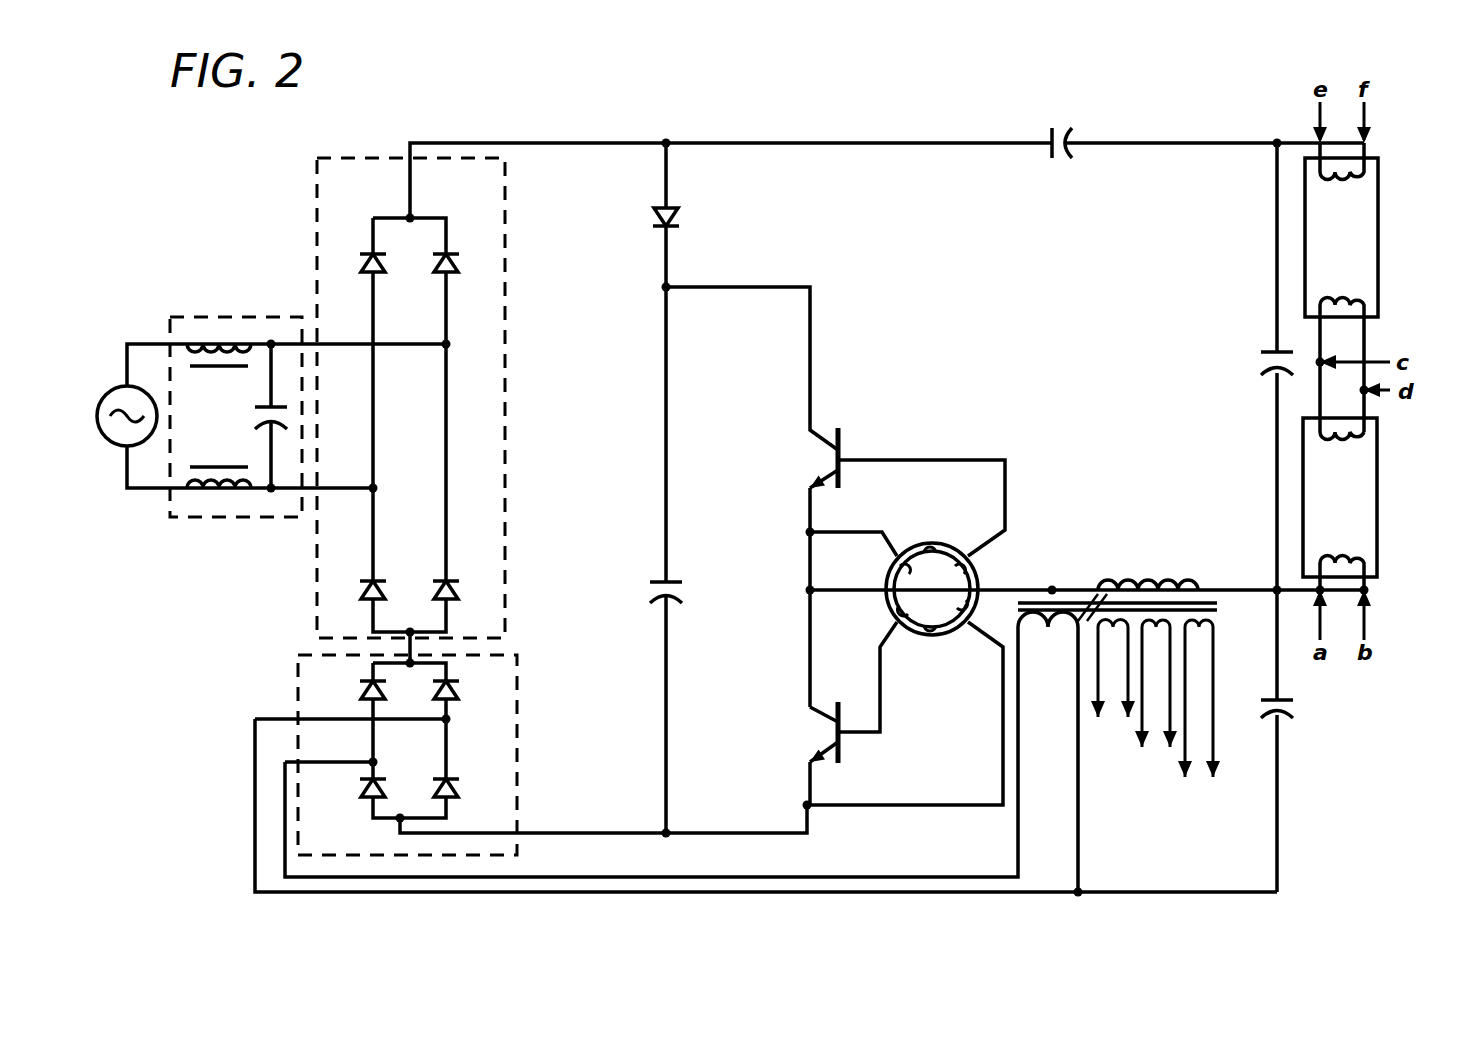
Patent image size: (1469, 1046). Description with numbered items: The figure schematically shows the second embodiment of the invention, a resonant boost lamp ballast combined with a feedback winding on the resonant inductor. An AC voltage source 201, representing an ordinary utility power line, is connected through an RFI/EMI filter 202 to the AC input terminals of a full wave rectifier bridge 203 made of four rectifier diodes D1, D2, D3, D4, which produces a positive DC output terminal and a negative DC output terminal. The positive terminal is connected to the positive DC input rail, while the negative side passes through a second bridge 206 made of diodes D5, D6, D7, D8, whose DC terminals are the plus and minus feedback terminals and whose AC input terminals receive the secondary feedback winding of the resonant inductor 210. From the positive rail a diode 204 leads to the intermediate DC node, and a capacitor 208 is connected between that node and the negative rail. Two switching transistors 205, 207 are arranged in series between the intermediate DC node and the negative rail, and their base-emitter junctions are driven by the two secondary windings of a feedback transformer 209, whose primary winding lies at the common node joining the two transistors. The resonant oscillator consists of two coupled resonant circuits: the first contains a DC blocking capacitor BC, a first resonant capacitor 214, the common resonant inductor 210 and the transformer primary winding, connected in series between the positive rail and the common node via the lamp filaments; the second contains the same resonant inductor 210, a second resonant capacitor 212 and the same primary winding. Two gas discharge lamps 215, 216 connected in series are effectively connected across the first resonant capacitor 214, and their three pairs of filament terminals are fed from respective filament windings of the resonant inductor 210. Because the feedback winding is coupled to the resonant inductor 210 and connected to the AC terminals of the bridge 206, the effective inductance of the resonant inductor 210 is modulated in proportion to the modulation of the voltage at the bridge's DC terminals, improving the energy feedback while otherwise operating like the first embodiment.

The voltage source 201 is at (107, 395).
The RFI/EMI filter 202 is at (172, 318).
The full wave rectifier bridge 203 is at (383, 398).
The diode 204 is at (680, 218).
The switching transistor 205 is at (818, 432).
The bridge 206 is at (380, 738).
The switching transistor 207 is at (818, 716).
The capacitor 208 is at (672, 590).
The feedback transformer 209 is at (890, 600).
The resonant inductor 210 is at (1242, 600).
The second resonant capacitor 212 is at (1290, 700).
The first resonant capacitor 214 is at (1262, 362).
The gas discharge lamp 215 is at (1341, 287).
The gas discharge lamp 216 is at (1340, 504).
The rectifier diode D1 is at (368, 268).
The rectifier diode D2 is at (440, 268).
The rectifier diode D3 is at (360, 590).
The rectifier diode D4 is at (460, 590).
The diode D5 is at (360, 690).
The diode D6 is at (460, 690).
The diode D7 is at (360, 788).
The diode D8 is at (460, 788).
The DC blocking capacitor BC is at (1065, 135).